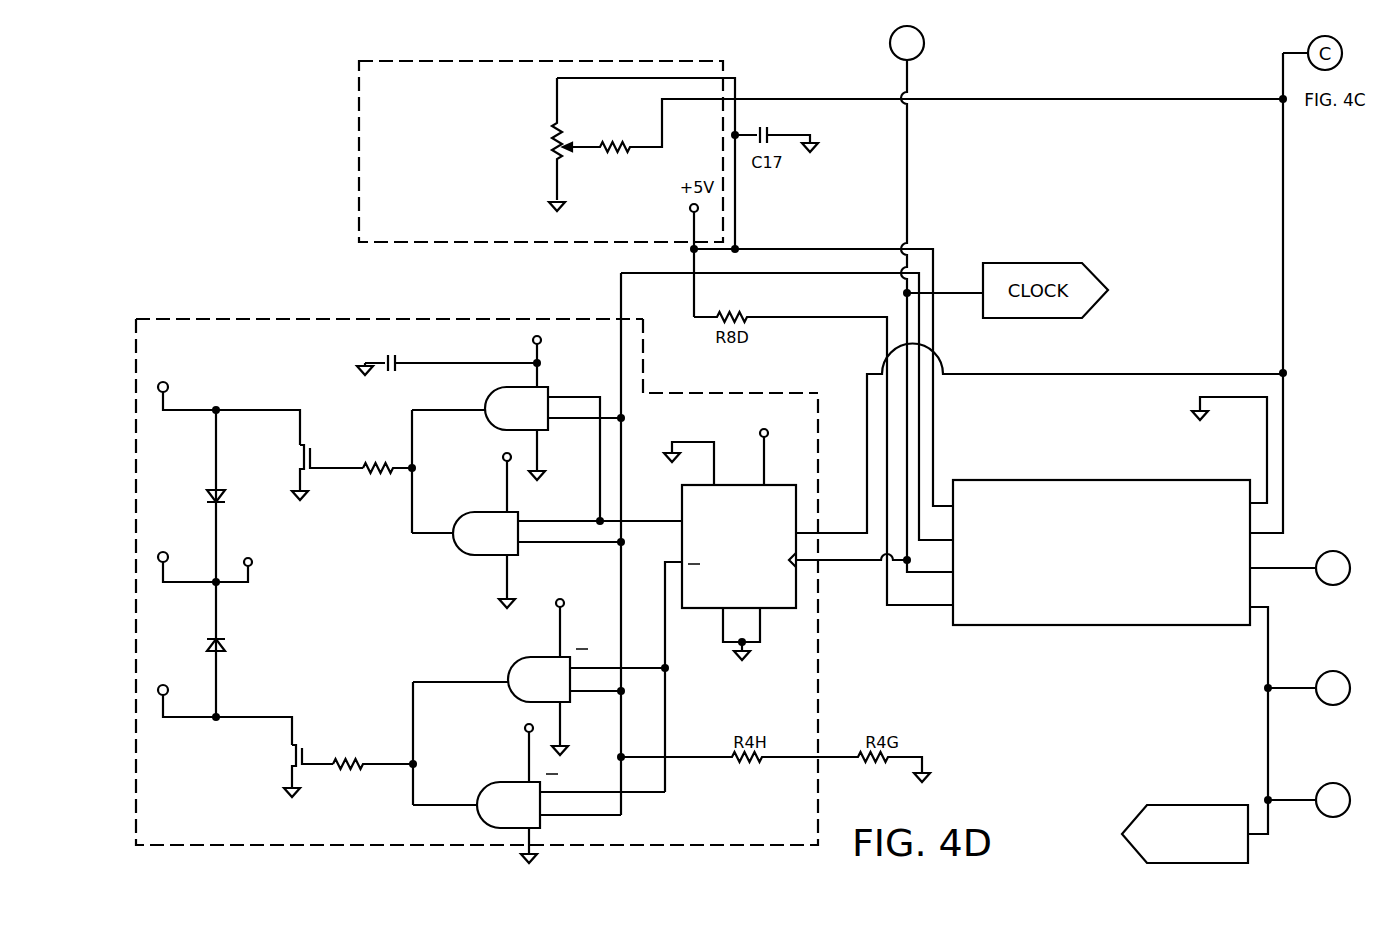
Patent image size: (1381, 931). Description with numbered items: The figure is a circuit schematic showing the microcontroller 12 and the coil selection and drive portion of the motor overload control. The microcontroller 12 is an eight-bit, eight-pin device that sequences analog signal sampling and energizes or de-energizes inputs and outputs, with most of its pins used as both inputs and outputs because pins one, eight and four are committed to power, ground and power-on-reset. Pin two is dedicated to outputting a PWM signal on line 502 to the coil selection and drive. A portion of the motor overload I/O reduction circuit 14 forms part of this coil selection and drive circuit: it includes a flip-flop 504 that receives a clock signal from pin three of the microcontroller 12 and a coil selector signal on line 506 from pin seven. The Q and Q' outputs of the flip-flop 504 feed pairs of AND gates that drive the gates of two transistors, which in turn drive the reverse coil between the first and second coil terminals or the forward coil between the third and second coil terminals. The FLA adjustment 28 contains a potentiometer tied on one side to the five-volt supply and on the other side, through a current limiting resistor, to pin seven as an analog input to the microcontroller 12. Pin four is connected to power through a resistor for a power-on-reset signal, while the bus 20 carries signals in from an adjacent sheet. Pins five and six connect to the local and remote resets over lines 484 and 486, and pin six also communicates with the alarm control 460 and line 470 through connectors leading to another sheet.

The microcontroller 12 is at (1114, 527).
The motor overload I/O reduction circuit 14 is at (660, 845).
The signal bus line from FIG. 4B 20 is at (907, 175).
The FLA adjustment 28 is at (359, 152).
The alarm control signal 460 is at (1222, 805).
The connector line F to FIG. 4C 470 is at (1292, 797).
The line to pin 5 484 is at (1290, 686).
The line to pin 6 486 is at (1300, 565).
The PWM signal line 502 is at (622, 363).
The flip-flop 504 is at (700, 598).
The coil selector signal line 506 is at (830, 530).